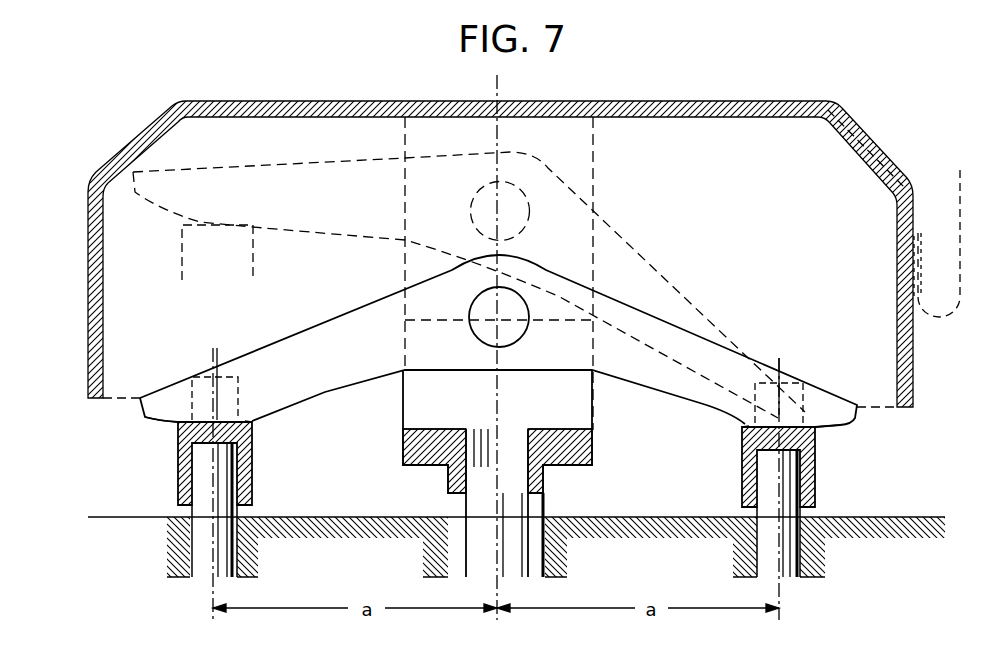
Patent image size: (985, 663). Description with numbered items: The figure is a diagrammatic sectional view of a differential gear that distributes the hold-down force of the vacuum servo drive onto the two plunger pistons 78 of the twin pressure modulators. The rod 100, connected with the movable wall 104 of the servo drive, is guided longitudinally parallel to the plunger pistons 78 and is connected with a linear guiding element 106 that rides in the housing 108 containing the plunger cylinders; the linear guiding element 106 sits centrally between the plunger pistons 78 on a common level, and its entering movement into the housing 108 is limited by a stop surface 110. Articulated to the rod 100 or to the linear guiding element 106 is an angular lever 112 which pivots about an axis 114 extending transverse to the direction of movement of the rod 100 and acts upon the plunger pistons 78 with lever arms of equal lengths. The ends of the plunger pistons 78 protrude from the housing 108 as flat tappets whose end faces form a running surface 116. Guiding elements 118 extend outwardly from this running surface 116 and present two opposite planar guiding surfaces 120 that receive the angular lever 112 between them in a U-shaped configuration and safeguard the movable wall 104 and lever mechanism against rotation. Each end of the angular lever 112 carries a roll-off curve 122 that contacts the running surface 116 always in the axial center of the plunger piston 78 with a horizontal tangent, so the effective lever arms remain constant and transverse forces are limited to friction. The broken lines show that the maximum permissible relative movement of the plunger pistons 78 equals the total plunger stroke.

The plunger piston 78 is at (196, 482).
The rod 100 is at (590, 185).
The movable wall 104 is at (712, 103).
The linear guiding element 106 is at (532, 507).
The housing 108 is at (907, 517).
The stop surface 110 is at (412, 466).
The angular lever 112 is at (713, 360).
The axis 114 is at (520, 296).
The running surface 116 is at (250, 423).
The guiding element 118 is at (244, 388).
The guiding surface 120 is at (201, 388).
The roll-off curve 122 is at (163, 419).